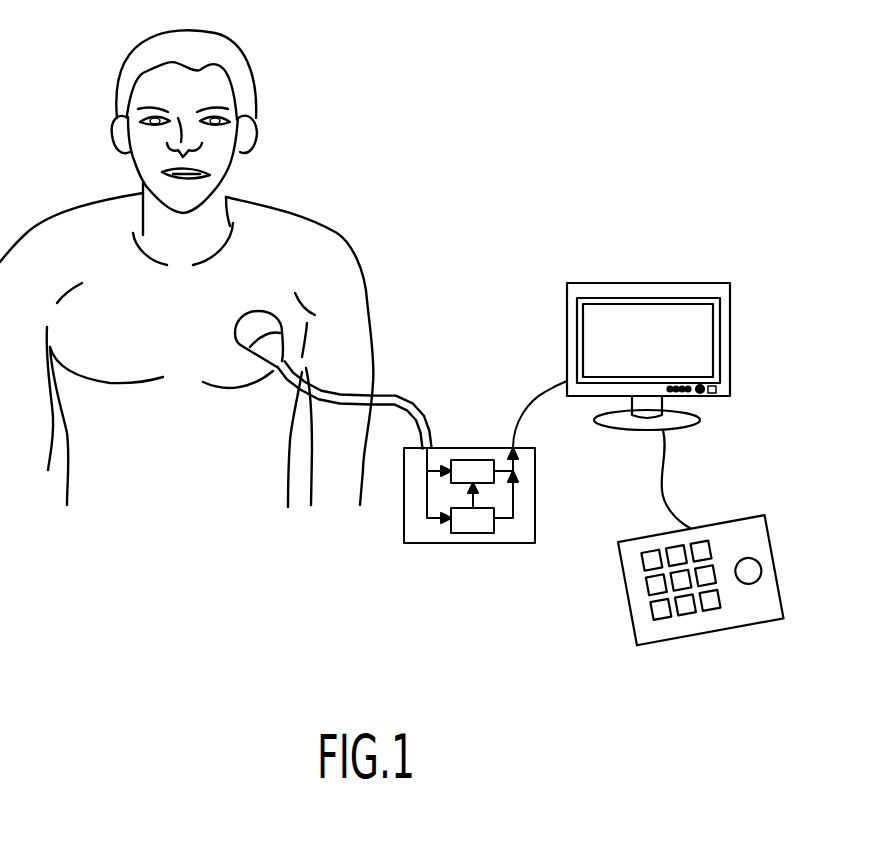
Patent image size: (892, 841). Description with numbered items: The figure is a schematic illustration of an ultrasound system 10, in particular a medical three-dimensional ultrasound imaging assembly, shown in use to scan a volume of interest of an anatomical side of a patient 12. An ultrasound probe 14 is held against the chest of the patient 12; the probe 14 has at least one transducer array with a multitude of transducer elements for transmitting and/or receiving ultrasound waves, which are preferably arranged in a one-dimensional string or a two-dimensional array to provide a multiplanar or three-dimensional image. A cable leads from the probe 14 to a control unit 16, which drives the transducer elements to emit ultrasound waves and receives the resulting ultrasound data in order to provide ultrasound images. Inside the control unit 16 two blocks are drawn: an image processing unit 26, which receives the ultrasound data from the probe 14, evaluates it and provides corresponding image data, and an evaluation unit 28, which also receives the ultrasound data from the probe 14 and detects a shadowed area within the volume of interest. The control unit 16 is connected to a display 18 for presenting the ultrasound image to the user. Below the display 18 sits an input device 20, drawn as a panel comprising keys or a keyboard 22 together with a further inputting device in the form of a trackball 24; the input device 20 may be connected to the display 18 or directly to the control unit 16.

The ultrasound system 10 is at (636, 132).
The patient 12 is at (310, 232).
The ultrasound probe 14 is at (260, 323).
The control unit 16 is at (499, 495).
The display 18 is at (660, 283).
The input device 20 is at (628, 605).
The keyboard 22 is at (688, 633).
The trackball 24 is at (748, 558).
The image processing unit 26 is at (470, 468).
The evaluation unit 28 is at (470, 523).